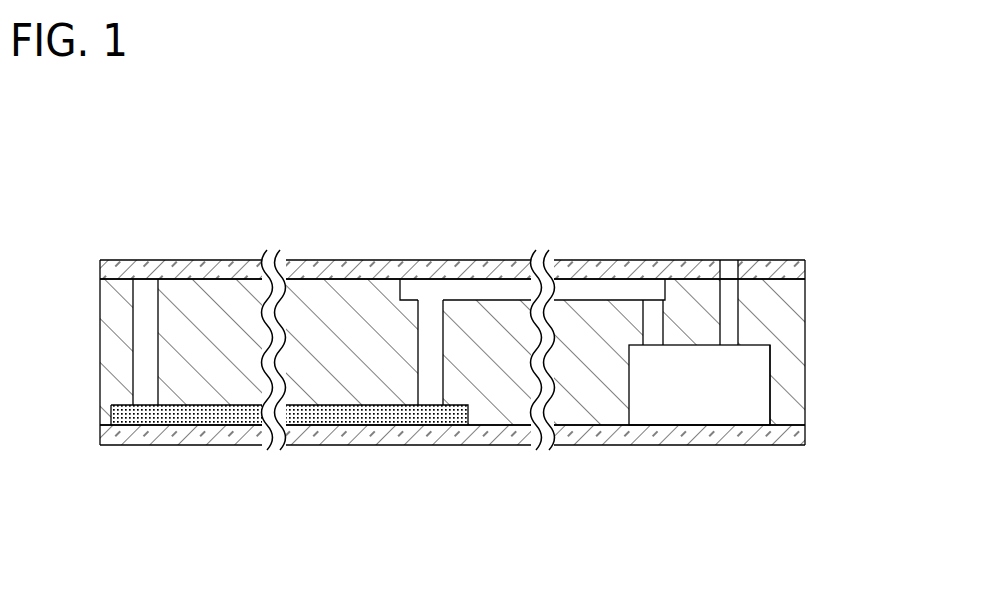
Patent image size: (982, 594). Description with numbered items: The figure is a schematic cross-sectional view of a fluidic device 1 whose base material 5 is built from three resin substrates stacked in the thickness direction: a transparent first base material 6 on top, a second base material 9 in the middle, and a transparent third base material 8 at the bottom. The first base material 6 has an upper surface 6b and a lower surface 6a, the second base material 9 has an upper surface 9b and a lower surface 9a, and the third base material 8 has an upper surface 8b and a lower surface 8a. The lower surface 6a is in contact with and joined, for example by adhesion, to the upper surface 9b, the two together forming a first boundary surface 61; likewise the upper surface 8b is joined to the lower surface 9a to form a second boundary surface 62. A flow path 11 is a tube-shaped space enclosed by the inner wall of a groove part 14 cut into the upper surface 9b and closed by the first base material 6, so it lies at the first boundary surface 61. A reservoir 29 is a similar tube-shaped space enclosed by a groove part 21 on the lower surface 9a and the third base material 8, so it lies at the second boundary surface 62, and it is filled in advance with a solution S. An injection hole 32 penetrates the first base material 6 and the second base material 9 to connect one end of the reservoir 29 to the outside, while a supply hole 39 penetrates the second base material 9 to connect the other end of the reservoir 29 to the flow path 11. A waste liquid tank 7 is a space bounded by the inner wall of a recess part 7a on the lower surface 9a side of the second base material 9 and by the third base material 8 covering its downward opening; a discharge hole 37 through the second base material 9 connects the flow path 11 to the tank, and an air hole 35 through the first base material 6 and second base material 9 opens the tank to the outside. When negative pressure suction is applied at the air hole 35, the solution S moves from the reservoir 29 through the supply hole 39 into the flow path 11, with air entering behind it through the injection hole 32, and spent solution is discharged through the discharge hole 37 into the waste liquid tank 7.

The fluidic device 1 is at (836, 134).
The base material 5 is at (880, 250).
The first base material 6 is at (790, 268).
The lower surface of the first base material 6a is at (344, 281).
The upper surface of the first base material 6b is at (335, 261).
The waste liquid tank 7 is at (702, 358).
The recess part 7a is at (754, 368).
The third base material 8 is at (793, 436).
The lower surface of the third base material 8a is at (736, 446).
The upper surface of the third base material 8b is at (679, 422).
The second base material 9 is at (788, 352).
The lower surface of the second base material 9a is at (483, 427).
The upper surface of the second base material 9b is at (312, 280).
The flow path 11 is at (610, 292).
The groove part 14 is at (403, 282).
The groove part 21 is at (466, 413).
The reservoir 29 is at (192, 413).
The injection hole 32 is at (142, 266).
The air hole 35 is at (737, 262).
The discharge hole 37 is at (648, 323).
The supply hole 39 is at (422, 320).
The first boundary surface 61 is at (120, 277).
The second boundary surface 62 is at (113, 428).
The solution S is at (230, 420).